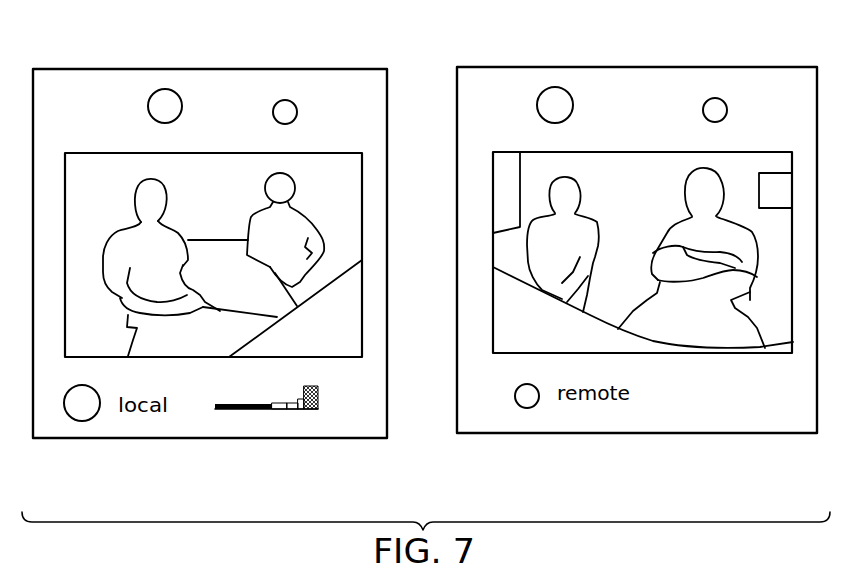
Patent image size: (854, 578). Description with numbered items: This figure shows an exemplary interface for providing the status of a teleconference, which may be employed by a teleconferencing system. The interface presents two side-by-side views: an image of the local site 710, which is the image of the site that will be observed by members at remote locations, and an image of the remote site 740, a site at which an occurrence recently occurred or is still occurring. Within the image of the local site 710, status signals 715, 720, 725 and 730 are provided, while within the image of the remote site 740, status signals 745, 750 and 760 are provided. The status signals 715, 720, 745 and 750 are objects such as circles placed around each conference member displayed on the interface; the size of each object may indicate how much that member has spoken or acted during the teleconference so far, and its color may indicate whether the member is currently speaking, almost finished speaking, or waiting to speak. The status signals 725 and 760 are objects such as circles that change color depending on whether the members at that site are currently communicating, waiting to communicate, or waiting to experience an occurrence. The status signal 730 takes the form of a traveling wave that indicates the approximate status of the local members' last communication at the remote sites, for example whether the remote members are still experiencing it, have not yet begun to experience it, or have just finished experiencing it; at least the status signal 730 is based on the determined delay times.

The image of the local site 710 is at (205, 77).
The status signal 715 is at (156, 105).
The status signal 720 is at (280, 113).
The status signal 725 is at (83, 410).
The status signal 730 is at (248, 410).
The image of the remote site 740 is at (613, 74).
The status signal 745 is at (548, 107).
The status signal 750 is at (710, 111).
The status signal 760 is at (528, 403).